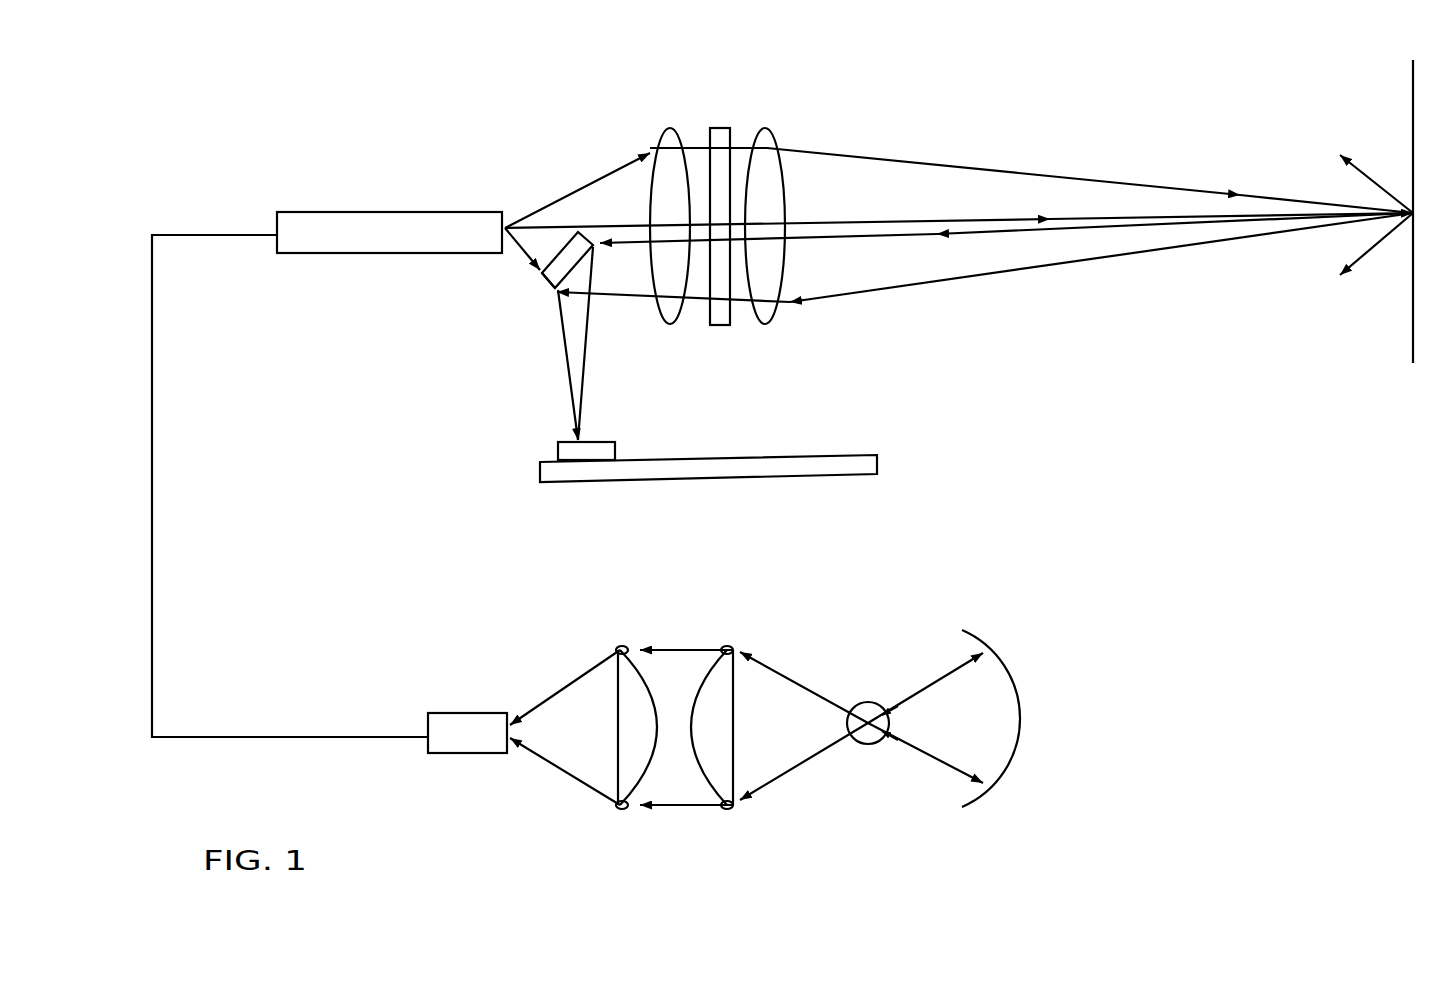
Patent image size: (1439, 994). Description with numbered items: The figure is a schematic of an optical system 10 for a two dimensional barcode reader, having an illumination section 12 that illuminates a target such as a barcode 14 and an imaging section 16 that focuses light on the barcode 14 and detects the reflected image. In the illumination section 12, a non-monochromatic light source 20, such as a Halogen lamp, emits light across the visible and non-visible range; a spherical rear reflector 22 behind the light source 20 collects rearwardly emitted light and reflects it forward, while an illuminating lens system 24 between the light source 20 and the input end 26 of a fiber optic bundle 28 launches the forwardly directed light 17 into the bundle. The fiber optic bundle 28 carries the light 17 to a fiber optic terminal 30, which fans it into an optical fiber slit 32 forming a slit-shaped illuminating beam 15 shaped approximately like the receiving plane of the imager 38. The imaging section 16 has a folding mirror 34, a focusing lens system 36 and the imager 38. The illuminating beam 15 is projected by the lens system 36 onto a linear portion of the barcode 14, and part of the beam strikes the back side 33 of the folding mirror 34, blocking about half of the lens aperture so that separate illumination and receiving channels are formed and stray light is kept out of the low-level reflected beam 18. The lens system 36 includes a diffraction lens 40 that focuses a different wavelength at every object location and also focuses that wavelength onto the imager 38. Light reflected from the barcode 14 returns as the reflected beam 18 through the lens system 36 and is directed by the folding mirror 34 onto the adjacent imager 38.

The optical system 10 is at (228, 145).
The illumination section 12 is at (755, 734).
The barcode 14 is at (1413, 90).
The illuminating beam 15 is at (1052, 170).
The imaging section 16 is at (775, 230).
The forwardly directed light 17 is at (798, 683).
The reflected light beam 18 is at (822, 242).
The non-monochromatic light source 20 is at (862, 703).
The spherical rear reflector 22 is at (1003, 665).
The illuminating lens system 24 is at (725, 812).
The input end 26 is at (517, 713).
The fiber optic bundle 28 is at (225, 737).
The fiber optic terminal 30 is at (390, 210).
The optical fiber slit 32 is at (508, 228).
The back side 33 is at (541, 273).
The folding mirror 34 is at (548, 288).
The focusing lens system 36 is at (672, 324).
The imager 38 is at (617, 450).
The diffraction lens 40 is at (718, 128).